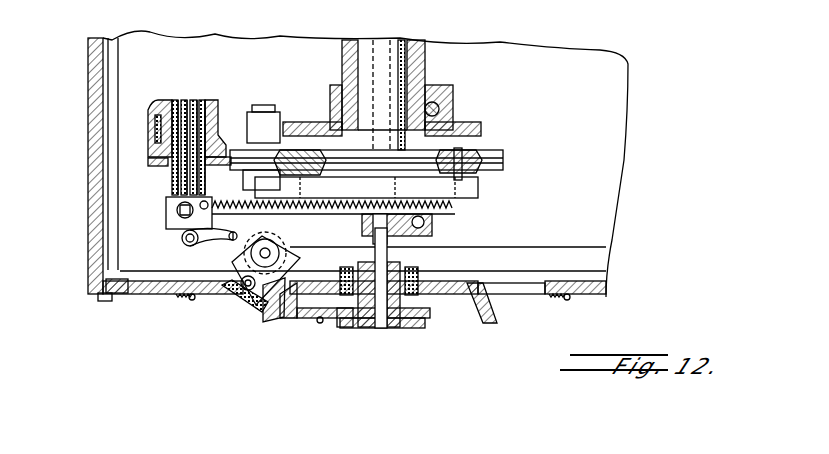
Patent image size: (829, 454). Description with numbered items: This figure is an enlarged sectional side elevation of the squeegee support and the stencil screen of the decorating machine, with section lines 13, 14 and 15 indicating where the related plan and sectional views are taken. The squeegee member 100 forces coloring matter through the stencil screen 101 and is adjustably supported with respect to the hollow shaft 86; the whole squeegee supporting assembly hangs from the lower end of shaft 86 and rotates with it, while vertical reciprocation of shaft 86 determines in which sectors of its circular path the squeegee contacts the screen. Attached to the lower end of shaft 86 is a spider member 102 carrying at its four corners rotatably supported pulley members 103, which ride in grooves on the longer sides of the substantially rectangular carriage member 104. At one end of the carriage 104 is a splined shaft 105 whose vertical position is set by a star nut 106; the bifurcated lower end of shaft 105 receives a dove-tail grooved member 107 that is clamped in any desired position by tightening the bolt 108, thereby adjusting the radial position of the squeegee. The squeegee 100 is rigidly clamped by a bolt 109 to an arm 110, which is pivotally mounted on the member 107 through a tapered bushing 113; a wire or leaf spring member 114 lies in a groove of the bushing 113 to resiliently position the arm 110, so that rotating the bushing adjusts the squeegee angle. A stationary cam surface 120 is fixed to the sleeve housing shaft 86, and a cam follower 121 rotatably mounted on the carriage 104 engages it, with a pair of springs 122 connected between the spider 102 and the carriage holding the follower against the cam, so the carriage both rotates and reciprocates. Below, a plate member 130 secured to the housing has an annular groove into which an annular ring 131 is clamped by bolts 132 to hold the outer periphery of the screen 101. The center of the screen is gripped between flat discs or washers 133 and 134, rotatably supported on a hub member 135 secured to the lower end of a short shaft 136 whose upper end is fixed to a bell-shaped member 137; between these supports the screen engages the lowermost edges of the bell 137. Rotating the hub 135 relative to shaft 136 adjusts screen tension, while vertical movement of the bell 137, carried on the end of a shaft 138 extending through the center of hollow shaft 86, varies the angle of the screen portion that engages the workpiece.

The section line 13- 13 is at (165, 249).
The section line 14- 14 is at (250, 80).
The section line 15- 15 is at (195, 64).
The shaft 86 is at (402, 100).
The squeegee member 100 is at (245, 298).
The stencil screen 101 is at (262, 312).
The spider member 102 is at (476, 190).
The pulley members 103 is at (322, 166).
The carriage member 104 is at (504, 163).
The splined shaft 105 is at (195, 100).
The star nut 106 is at (157, 167).
The dove-tail grooved member 107 is at (185, 244).
The bolt 108 is at (176, 212).
The bolt 109 is at (240, 290).
The arm 110 is at (240, 268).
The tapered bushing 113 is at (272, 258).
The wire or leaf spring member 114 is at (210, 240).
The cam surface 120 is at (306, 122).
The cam follower 121 is at (249, 121).
The springs 122 is at (330, 216).
The plate member 130 is at (143, 294).
The annular ring 131 is at (180, 295).
The bolts 132 is at (190, 299).
The flat disc or washer 133 is at (300, 318).
The flat disc or washer 134 is at (320, 323).
The hub member 135 is at (365, 328).
The short shaft 136 is at (385, 330).
The bell-shaped member 137 is at (466, 283).
The shaft 138 is at (390, 256).